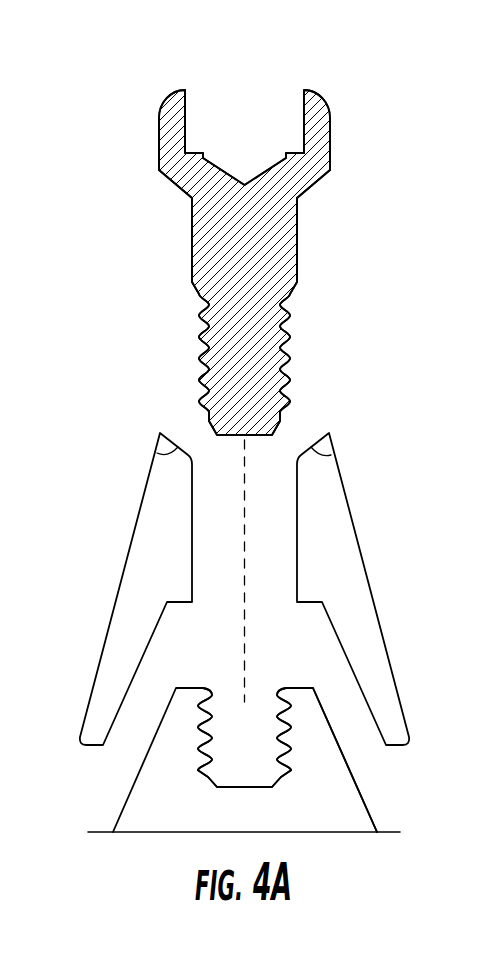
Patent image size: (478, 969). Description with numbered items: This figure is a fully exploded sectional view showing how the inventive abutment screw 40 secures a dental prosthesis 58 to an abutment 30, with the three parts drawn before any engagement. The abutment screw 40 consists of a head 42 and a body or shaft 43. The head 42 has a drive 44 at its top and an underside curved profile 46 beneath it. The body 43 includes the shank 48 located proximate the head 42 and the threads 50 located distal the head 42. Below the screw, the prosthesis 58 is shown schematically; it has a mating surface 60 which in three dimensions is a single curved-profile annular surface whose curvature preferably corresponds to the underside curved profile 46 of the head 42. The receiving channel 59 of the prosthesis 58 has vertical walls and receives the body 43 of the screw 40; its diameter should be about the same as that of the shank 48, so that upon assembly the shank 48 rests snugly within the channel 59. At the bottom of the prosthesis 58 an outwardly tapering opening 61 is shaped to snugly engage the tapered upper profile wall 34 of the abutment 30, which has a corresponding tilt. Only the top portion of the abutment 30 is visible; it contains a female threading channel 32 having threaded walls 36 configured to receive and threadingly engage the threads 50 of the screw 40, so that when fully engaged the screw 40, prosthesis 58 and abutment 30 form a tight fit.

The abutment 30 is at (345, 812).
The female threading channel 32 is at (235, 758).
The tapered upper profile wall 34 is at (345, 757).
The threaded walls 36 is at (287, 760).
The abutment screw 40 is at (117, 162).
The head 42 is at (387, 83).
The body/shaft 43 is at (181, 202).
The drive 44 is at (265, 120).
The underside curved profile 46 is at (313, 183).
The shank 48 is at (297, 262).
The threads 50 is at (290, 360).
The prosthesis 58 is at (113, 597).
The receiving channel 59 is at (280, 465).
The mating surface 60 is at (157, 453).
The outwardly tapering opening 61 is at (292, 651).